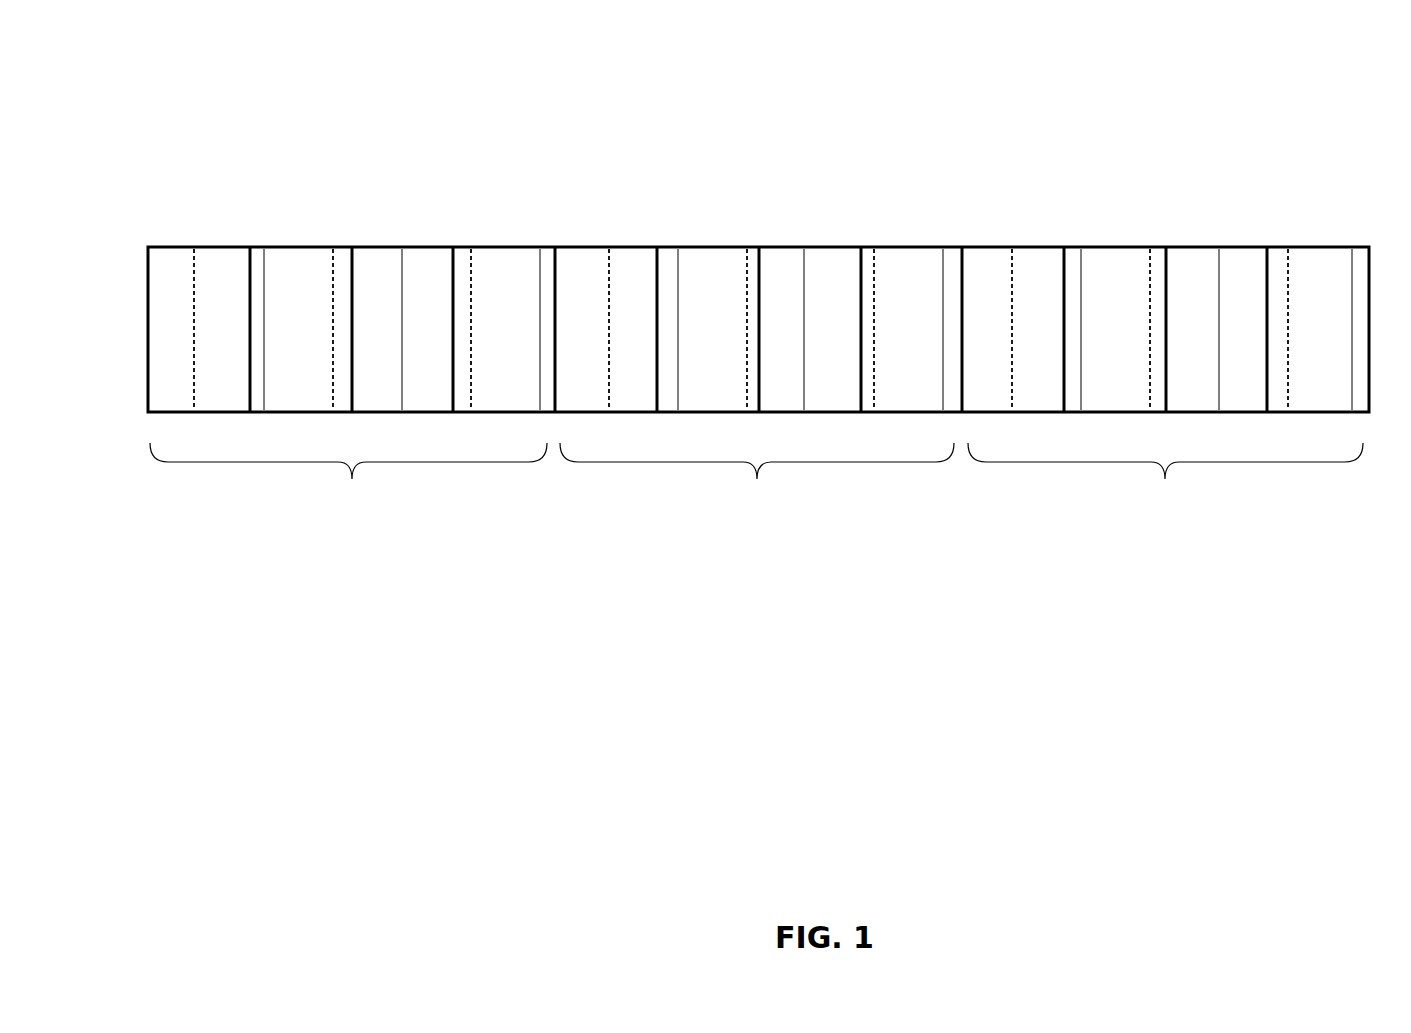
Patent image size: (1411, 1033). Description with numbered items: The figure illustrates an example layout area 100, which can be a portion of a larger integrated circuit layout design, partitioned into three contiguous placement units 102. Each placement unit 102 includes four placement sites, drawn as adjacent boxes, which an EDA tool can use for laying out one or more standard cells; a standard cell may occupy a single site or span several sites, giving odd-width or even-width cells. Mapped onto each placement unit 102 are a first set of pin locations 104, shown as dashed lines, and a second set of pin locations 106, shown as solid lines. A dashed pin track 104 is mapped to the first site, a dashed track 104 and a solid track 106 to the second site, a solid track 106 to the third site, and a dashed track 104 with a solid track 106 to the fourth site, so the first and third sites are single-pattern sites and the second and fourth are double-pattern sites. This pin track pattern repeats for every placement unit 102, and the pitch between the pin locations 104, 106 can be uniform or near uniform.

The layout area 100 is at (1288, 84).
The placement unit 102 is at (756, 476).
The first set of pin locations 104 is at (194, 266).
The second set of pin locations 106 is at (264, 266).